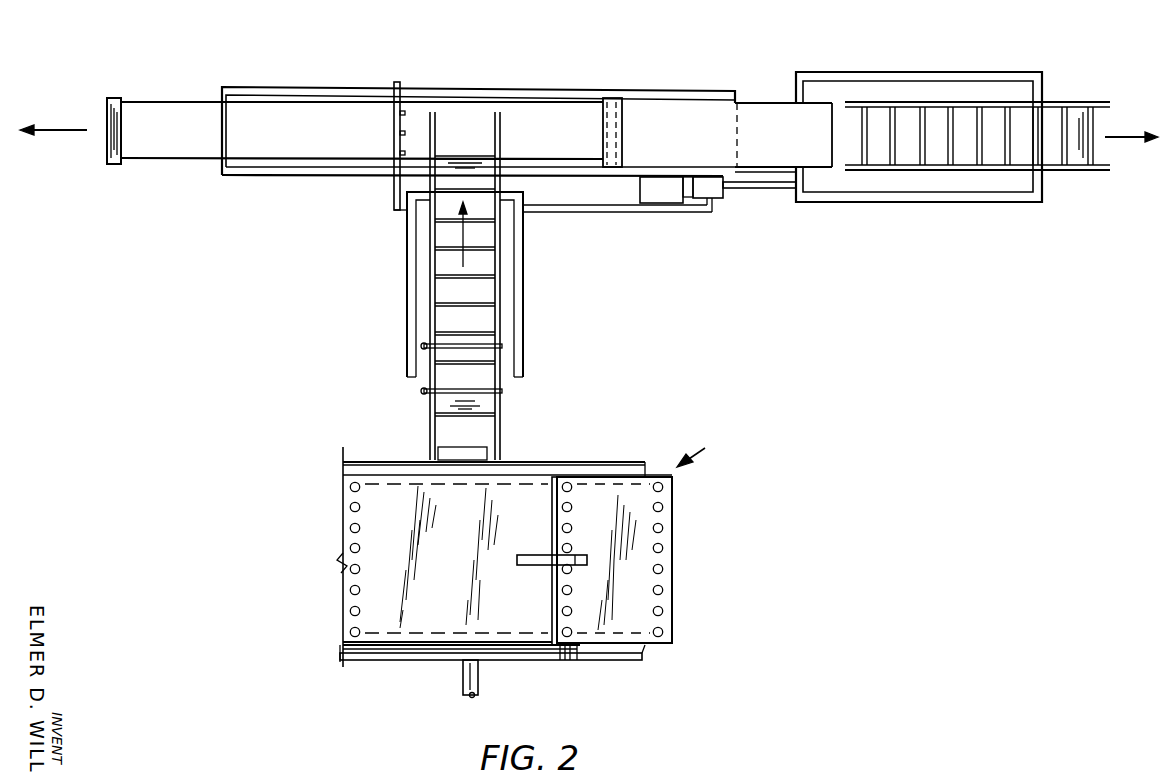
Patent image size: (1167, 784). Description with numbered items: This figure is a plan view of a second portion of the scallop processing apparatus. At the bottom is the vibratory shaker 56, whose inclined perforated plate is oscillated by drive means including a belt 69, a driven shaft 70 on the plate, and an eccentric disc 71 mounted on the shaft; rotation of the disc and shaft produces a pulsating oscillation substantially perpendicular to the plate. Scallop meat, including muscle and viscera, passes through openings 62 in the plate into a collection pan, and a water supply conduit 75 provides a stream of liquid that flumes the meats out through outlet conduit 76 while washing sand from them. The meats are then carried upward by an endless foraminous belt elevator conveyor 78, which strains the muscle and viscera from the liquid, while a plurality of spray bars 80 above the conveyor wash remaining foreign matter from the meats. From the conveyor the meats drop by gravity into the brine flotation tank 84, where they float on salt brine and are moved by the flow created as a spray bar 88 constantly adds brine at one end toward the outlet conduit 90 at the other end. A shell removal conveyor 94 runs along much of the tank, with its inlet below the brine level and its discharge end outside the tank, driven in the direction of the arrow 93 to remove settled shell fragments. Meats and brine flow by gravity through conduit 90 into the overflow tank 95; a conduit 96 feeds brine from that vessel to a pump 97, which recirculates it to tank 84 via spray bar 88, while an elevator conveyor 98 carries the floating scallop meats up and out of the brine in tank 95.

The arrow 93 is at (57, 128).
The shell removal conveyor 94 is at (176, 110).
The brine flotation tank 84 is at (306, 90).
The spray bar 88 is at (394, 147).
The outlet conduit 90 is at (758, 103).
The overflow tank 95 is at (905, 72).
The elevator conveyor 98 is at (1047, 125).
The conduit 96 is at (778, 188).
The pump 97 is at (723, 200).
The spray bars 80 is at (425, 390).
The endless foraminous belt elevator conveyor 78 is at (497, 413).
The outlet conduit 76 is at (482, 452).
The vibratory shaker 56 is at (538, 532).
The driven shaft 70 is at (550, 516).
The eccentric disc 71 is at (584, 558).
The openings 62 is at (665, 548).
The belt 69 is at (420, 657).
The water supply conduit 75 is at (478, 676).